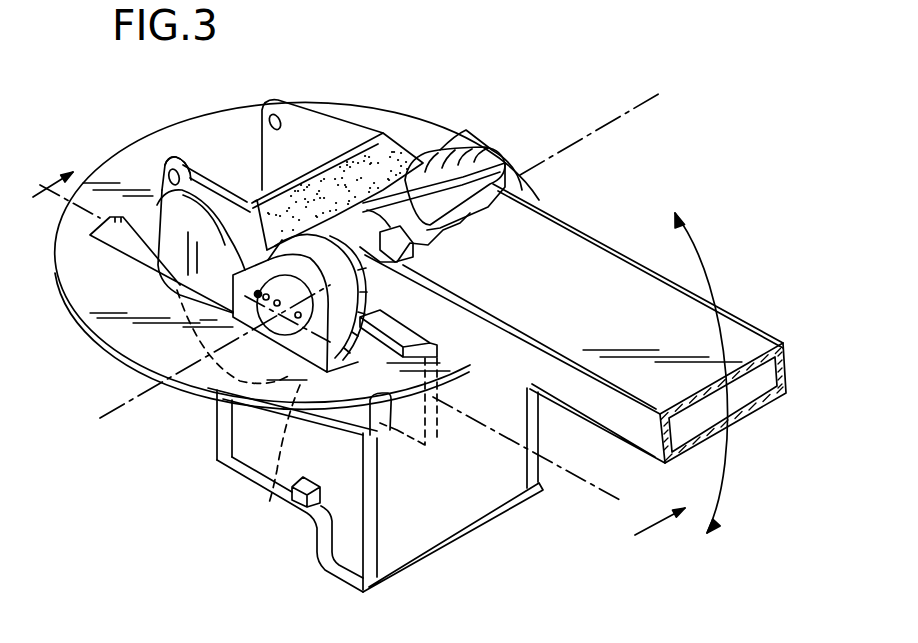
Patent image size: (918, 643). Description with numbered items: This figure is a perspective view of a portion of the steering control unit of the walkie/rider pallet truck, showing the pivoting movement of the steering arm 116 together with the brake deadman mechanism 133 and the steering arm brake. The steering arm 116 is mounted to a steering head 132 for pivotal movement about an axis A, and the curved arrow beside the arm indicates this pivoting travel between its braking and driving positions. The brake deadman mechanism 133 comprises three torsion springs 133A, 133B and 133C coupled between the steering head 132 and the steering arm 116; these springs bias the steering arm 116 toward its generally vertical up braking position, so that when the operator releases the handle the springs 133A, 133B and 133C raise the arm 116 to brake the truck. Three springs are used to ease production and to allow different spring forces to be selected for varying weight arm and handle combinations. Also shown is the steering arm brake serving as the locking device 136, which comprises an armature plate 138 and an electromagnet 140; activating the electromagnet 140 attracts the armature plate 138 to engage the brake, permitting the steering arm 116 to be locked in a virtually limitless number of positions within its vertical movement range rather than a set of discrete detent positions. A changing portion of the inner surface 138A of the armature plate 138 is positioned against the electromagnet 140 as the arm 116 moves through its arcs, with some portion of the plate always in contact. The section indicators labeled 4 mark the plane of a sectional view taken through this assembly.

The steering arm 116 is at (616, 334).
The steering head 132 is at (153, 330).
The brake deadman mechanism 133 is at (423, 153).
The torsion spring 133A is at (439, 190).
The torsion spring 133B is at (389, 197).
The torsion spring 133C is at (256, 190).
The locking device 136 is at (205, 427).
The armature plate 138 is at (157, 200).
The inner surface 138A is at (200, 220).
The electromagnet 140 is at (248, 414).
The section line 4- 4 is at (359, 354).
The axis A is at (638, 103).